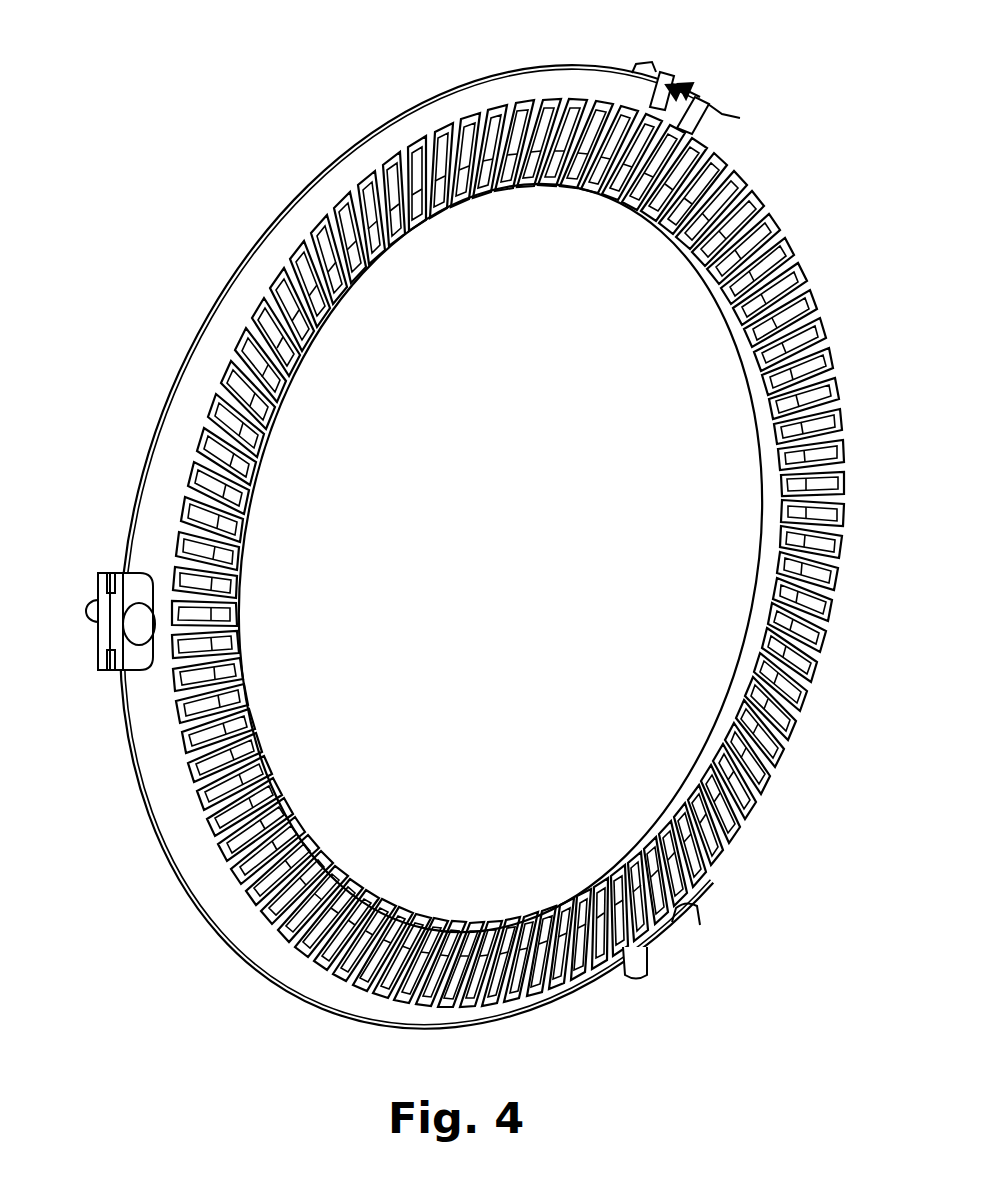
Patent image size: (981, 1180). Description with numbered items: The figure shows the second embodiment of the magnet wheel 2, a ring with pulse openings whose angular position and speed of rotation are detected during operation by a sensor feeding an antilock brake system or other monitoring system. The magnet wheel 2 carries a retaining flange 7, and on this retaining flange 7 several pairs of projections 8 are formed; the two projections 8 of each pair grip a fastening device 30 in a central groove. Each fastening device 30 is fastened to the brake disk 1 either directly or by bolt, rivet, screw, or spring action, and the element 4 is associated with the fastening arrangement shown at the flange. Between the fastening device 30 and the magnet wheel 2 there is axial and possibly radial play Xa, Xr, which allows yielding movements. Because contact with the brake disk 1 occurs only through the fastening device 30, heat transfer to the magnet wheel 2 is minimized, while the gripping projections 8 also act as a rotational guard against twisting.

The brake disk 1 is at (479, 558).
The magnet wheel 2 is at (460, 133).
The retaining flange 7 is at (347, 167).
The projections 8 is at (650, 63).
The fastening device 30 is at (97, 594).
The fastening element 4 is at (110, 680).
The axial and radial directions Xa, Xr is at (657, 945).